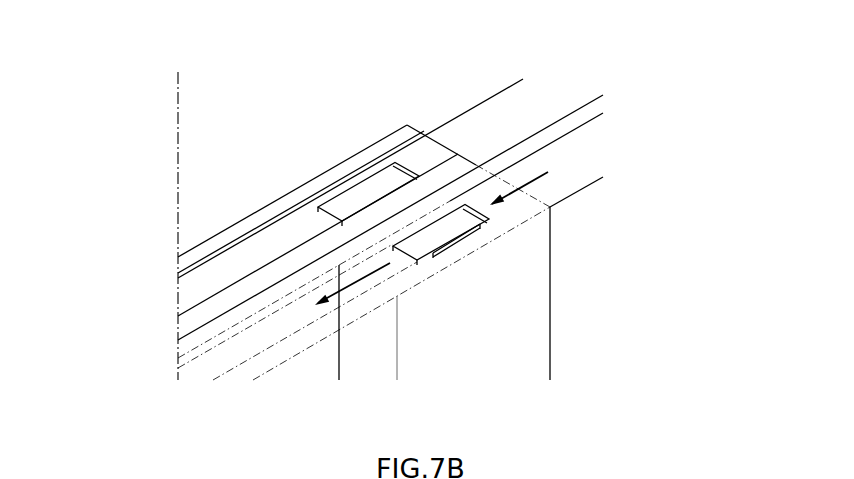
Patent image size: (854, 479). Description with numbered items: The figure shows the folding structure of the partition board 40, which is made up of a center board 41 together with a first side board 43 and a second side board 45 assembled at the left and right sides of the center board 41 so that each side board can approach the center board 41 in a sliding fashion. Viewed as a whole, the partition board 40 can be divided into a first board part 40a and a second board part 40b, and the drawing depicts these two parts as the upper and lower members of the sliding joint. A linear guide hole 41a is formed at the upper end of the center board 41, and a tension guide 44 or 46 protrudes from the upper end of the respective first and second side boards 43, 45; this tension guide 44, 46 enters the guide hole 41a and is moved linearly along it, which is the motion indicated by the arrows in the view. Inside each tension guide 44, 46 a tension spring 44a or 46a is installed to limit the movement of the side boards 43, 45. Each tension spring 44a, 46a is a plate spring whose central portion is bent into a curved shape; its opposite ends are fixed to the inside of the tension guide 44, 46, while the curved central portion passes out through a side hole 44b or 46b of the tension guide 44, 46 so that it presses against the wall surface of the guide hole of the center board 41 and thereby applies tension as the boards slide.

The partition board 40 is at (453, 212).
The first board part 40a is at (333, 153).
The second board part 40b is at (563, 288).
The center board 41 is at (188, 325).
The linear guide hole 41a is at (250, 323).
The first side board 43 is at (425, 119).
The second side board 45 is at (528, 170).
The tension guide 44 is at (437, 313).
The tension guide 46 is at (437, 313).
The tension spring 44a is at (512, 322).
The tension spring 46a is at (452, 250).
The side hole 44b is at (333, 313).
The side hole 46b is at (440, 267).